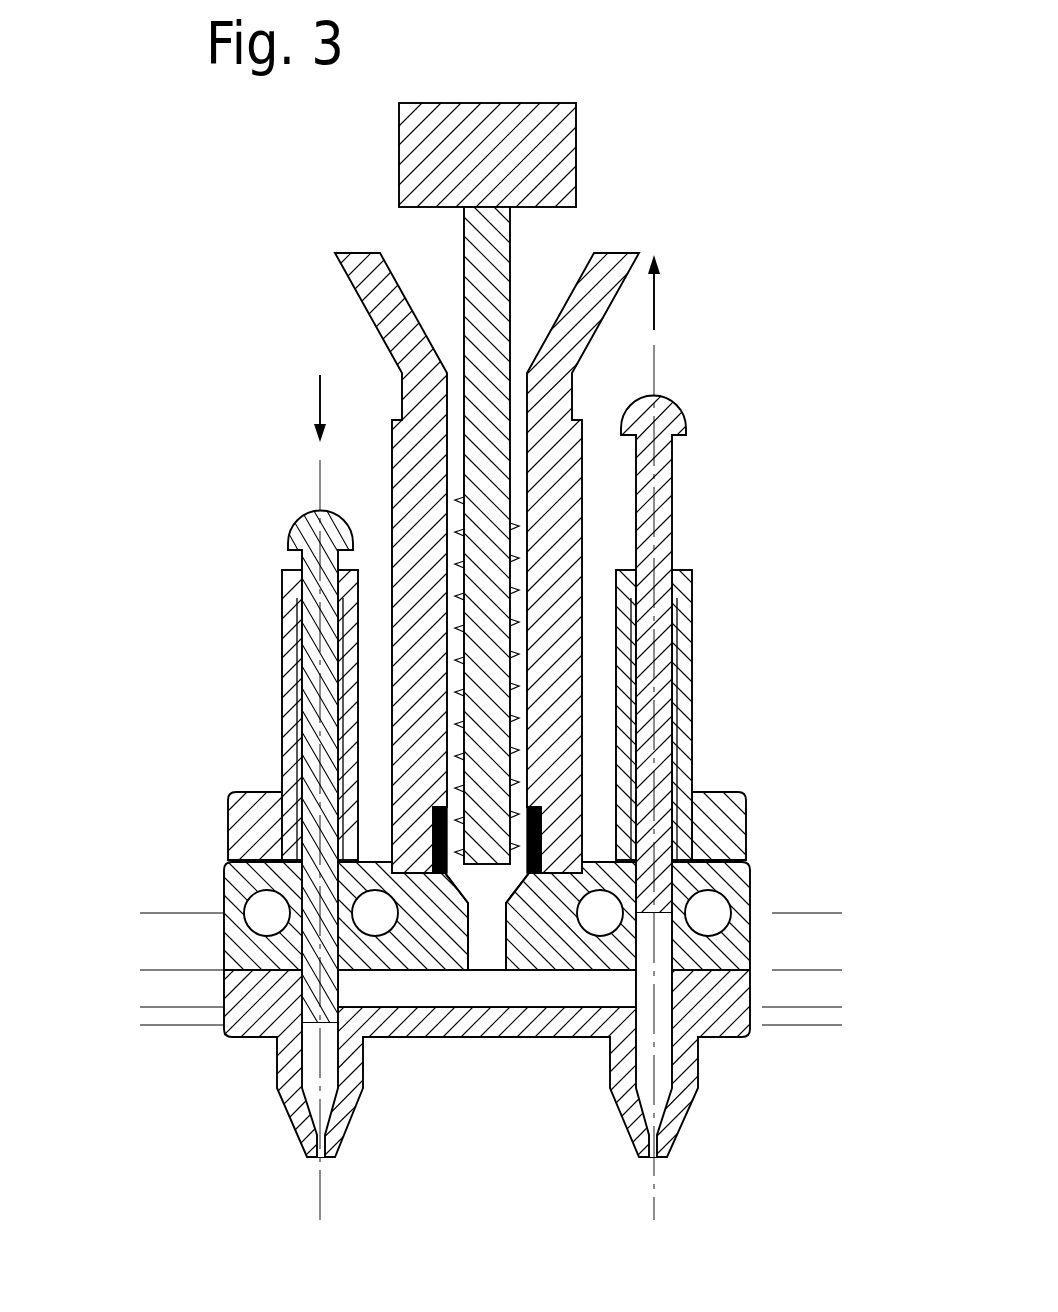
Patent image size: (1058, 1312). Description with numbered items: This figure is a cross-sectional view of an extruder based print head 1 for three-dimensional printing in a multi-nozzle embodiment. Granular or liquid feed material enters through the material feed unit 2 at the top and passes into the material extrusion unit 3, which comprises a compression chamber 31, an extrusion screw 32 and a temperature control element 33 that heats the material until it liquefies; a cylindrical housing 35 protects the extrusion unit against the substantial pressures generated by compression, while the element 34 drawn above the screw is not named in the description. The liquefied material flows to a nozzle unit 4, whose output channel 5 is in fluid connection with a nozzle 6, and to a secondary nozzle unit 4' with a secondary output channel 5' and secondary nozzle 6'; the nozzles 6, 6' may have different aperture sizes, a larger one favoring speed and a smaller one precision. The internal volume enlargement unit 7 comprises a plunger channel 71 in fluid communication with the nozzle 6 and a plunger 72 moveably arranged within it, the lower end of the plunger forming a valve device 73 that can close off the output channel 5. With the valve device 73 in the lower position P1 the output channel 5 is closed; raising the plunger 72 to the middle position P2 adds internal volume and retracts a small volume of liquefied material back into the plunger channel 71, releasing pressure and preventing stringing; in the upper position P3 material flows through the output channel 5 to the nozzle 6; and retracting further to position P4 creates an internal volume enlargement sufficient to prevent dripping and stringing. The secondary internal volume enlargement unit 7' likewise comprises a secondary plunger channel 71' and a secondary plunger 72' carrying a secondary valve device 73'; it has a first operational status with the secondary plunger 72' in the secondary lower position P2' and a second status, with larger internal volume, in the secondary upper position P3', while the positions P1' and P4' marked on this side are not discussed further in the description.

The extruder based print head 1 is at (535, 610).
The material feed unit 2 is at (563, 258).
The material extrusion unit 3 is at (705, 717).
The nozzle unit 4 is at (192, 1102).
The secondary nozzle unit 4' is at (796, 1102).
The output channel 5 is at (487, 1063).
The secondary output channel 5' is at (487, 1056).
The nozzle 6 is at (380, 1155).
The secondary nozzle 6' is at (726, 1155).
The internal volume enlargement unit 7 is at (218, 715).
The secondary internal volume enlargement unit 7' is at (756, 715).
The compression chamber 31 is at (497, 892).
The extrusion screw 32 is at (485, 640).
The temperature control element 33 is at (538, 825).
The actuator head 34 is at (512, 103).
The cylindrical housing 35 is at (552, 692).
The plunger channel 71 is at (455, 916).
The secondary plunger channel 71' is at (703, 922).
The plunger 72 is at (278, 767).
The secondary plunger 72' is at (698, 655).
The valve device 73 is at (375, 1081).
The secondary valve device 73' is at (725, 1000).
The lower position P1 is at (138, 1025).
The middle position P2 is at (127, 1000).
The upper position P3 is at (138, 969).
The position P4 is at (138, 912).
The position level P1' is at (845, 1025).
The secondary lower position P2' is at (856, 998).
The secondary upper position P3' is at (850, 967).
The position level P4' is at (850, 911).